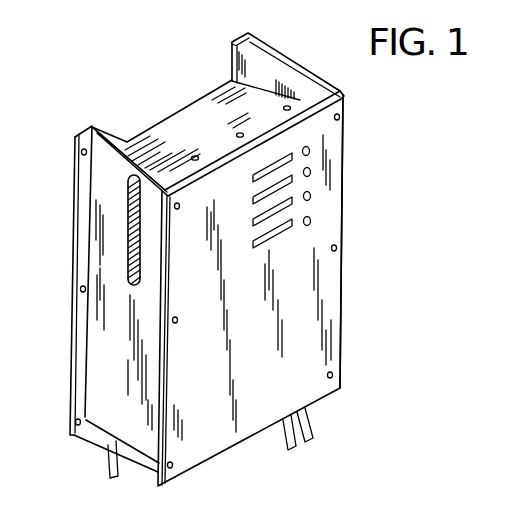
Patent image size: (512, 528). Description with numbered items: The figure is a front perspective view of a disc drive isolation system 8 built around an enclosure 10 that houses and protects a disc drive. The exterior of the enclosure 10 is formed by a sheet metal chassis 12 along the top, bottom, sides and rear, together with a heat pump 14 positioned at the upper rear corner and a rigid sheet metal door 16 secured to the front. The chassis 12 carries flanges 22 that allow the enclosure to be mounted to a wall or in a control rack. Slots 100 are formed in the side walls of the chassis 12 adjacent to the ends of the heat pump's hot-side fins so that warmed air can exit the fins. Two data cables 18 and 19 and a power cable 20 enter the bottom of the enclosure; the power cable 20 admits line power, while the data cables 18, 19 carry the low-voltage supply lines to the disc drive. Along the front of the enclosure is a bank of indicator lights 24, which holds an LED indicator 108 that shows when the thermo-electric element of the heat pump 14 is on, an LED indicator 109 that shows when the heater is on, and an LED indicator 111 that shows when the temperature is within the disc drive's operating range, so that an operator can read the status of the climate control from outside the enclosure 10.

The disc drive isolation system 8 is at (180, 77).
The enclosure 10 is at (343, 193).
The sheet metal chassis 12 is at (277, 58).
The heat pump 14 is at (171, 119).
The rigid sheet metal door 16 is at (334, 294).
The data cable 18 is at (288, 447).
The data cable 19 is at (310, 423).
The power cable 20 is at (110, 463).
The flanges 22 is at (73, 266).
The bank of indicator lights 24 is at (307, 234).
The slots 100 is at (132, 190).
The LED indicator 108 is at (306, 147).
The LED indicator 109 is at (309, 168).
The LED indicator 111 is at (310, 221).